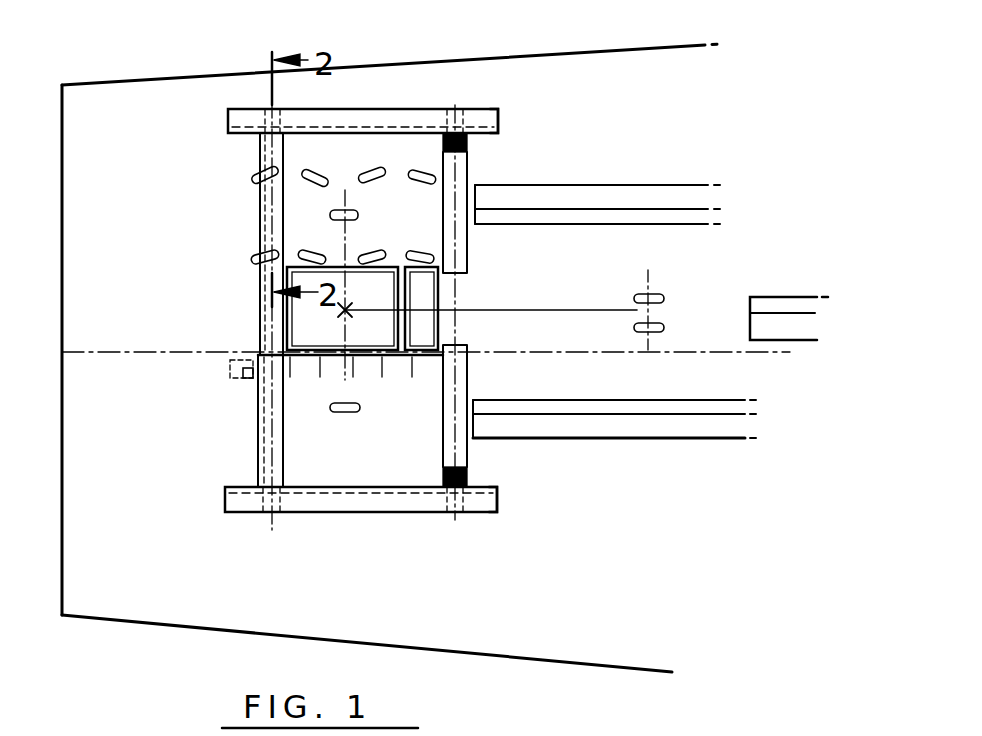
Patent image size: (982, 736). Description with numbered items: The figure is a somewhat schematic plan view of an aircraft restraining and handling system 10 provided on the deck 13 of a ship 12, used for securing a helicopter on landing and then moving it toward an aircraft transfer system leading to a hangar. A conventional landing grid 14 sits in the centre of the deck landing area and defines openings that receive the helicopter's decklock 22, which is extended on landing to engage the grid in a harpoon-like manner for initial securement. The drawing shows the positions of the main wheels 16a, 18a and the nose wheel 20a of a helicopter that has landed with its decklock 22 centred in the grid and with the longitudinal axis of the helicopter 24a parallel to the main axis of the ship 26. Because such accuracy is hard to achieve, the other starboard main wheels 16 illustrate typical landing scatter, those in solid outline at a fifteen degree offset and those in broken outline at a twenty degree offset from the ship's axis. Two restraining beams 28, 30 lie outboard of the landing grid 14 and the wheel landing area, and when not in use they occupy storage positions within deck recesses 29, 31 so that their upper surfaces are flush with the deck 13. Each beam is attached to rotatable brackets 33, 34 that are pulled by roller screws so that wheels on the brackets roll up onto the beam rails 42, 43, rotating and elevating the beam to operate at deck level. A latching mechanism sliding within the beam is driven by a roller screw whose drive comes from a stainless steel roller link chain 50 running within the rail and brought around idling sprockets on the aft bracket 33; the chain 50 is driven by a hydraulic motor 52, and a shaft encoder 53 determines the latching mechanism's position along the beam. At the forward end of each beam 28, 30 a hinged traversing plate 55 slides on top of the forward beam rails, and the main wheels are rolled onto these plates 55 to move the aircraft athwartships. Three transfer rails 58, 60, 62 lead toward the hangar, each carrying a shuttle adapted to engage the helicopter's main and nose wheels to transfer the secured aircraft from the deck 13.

The aircraft restraining and handling system 10 is at (700, 95).
The ship 12 is at (120, 623).
The deck 13 is at (378, 461).
The landing grid 14 is at (270, 277).
The starboard main wheels 16 is at (256, 177).
The main wheel 16a is at (358, 215).
The main wheel 18a is at (360, 408).
The nose wheel 20a is at (662, 293).
The decklock 22 is at (341, 311).
The longitudinal axis of the helicopter 24a is at (540, 288).
The main axis of the ship 26 is at (140, 350).
The restraining beam 28 is at (228, 117).
The deck recess 29 is at (499, 113).
The restraining beam 30 is at (225, 492).
The deck recess 31 is at (497, 507).
The rotatable bracket 33 is at (267, 107).
The rotatable bracket 34 is at (453, 108).
The beam rail 42 is at (263, 142).
The beam rail 43 is at (463, 162).
The roller link chain 50 is at (260, 418).
The hydraulic motor 52 is at (230, 362).
The shaft encoder 53 is at (248, 378).
The hinged traversing plate 55 is at (468, 142).
The transfer rail 58 is at (640, 205).
The transfer rail 60 is at (652, 425).
The transfer rail 62 is at (778, 328).